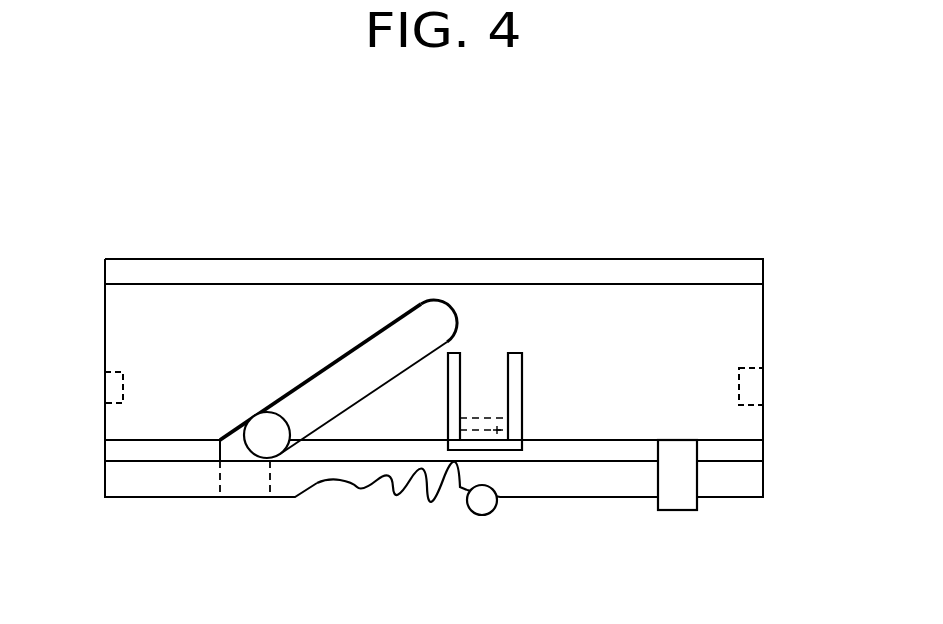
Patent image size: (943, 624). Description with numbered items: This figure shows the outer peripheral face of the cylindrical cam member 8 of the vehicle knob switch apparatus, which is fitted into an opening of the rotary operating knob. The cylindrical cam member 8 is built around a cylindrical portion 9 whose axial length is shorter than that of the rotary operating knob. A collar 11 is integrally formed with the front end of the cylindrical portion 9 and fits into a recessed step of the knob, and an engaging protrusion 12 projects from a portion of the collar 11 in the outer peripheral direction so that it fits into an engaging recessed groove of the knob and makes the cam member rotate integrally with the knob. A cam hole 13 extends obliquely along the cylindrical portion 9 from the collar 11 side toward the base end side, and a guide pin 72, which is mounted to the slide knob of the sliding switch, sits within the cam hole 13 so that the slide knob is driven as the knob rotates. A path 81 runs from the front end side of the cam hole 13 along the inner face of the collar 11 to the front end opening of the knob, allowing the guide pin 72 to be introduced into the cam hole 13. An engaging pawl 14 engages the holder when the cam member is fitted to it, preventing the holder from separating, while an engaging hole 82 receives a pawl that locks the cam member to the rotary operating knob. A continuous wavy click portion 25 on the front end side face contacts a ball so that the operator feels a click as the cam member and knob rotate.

The cylindrical cam member 8 is at (772, 252).
The cylindrical portion 9 is at (743, 323).
The collar 11 is at (750, 481).
The engaging protrusion 12 is at (682, 508).
The cam hole 13 is at (359, 350).
The engaging pawl 14 is at (497, 434).
The continuous wavy click portion 25 is at (370, 489).
The guide pin 72 is at (259, 430).
The path 81 is at (272, 474).
The engaging hole 82 is at (105, 386).